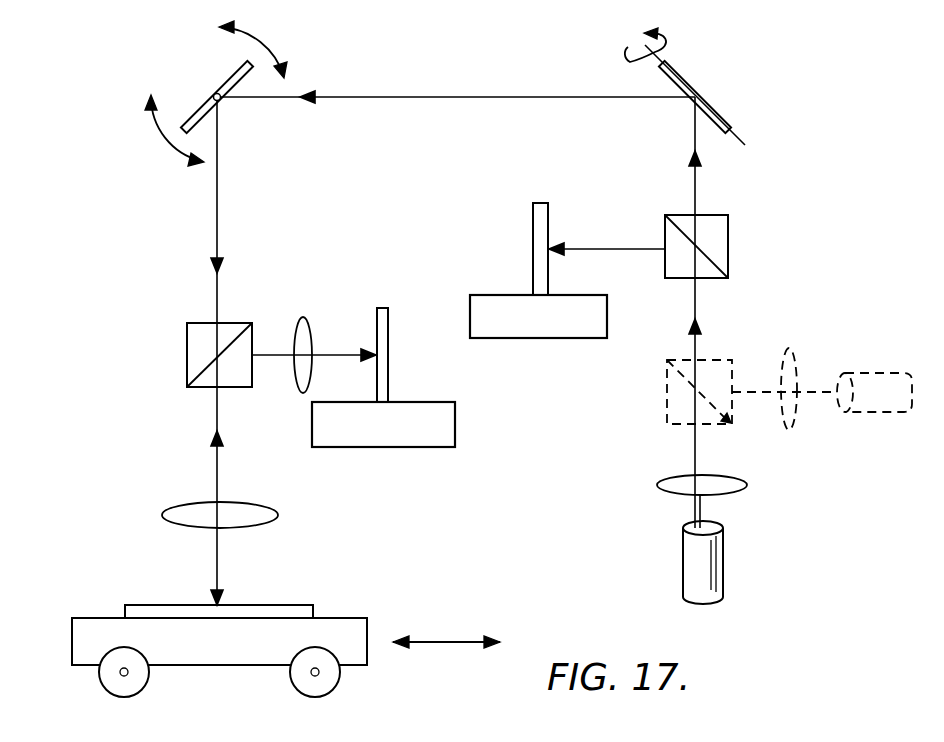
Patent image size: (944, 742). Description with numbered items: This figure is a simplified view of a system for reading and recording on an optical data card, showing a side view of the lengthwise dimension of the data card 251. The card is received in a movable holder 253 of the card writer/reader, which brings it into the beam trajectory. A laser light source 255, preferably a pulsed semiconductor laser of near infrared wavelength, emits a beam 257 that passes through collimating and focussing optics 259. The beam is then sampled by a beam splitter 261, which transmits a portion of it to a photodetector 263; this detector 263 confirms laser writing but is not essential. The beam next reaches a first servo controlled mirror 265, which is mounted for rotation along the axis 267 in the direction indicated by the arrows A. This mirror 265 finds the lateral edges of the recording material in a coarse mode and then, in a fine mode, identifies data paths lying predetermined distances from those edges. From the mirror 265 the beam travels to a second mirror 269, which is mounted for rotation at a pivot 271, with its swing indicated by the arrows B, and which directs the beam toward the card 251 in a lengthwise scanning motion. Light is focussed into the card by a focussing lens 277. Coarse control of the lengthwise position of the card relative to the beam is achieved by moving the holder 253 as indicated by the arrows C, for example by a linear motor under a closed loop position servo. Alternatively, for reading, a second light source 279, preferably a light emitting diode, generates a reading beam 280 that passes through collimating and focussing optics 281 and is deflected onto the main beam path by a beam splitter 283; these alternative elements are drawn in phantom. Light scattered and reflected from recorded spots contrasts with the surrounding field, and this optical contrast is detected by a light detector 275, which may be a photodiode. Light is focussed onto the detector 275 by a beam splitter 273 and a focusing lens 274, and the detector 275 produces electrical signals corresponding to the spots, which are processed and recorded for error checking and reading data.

The data card 251 is at (145, 605).
The movable holder 253 is at (88, 618).
The laser light source 255 is at (683, 585).
The beam 257 is at (697, 507).
The collimating and focussing optics 259 is at (675, 480).
The beam splitter 261 is at (728, 217).
The photodetector 263 is at (533, 210).
The first servo controlled mirror 265 is at (700, 90).
The axis 267 is at (744, 142).
The mirror 269 is at (233, 66).
The pivot 271 is at (211, 93).
The beam splitter 273 is at (202, 323).
The focusing lens 274 is at (308, 320).
The light detector 275 is at (390, 330).
The focussing lens 277 is at (192, 503).
The second light source 279 is at (876, 412).
The reading beam 280 is at (835, 392).
The collimating and focussing optics 281 is at (794, 425).
The beam splitter 283 is at (667, 395).
The arrows A is at (668, 42).
The arrows B is at (262, 36).
The arrows C is at (447, 640).